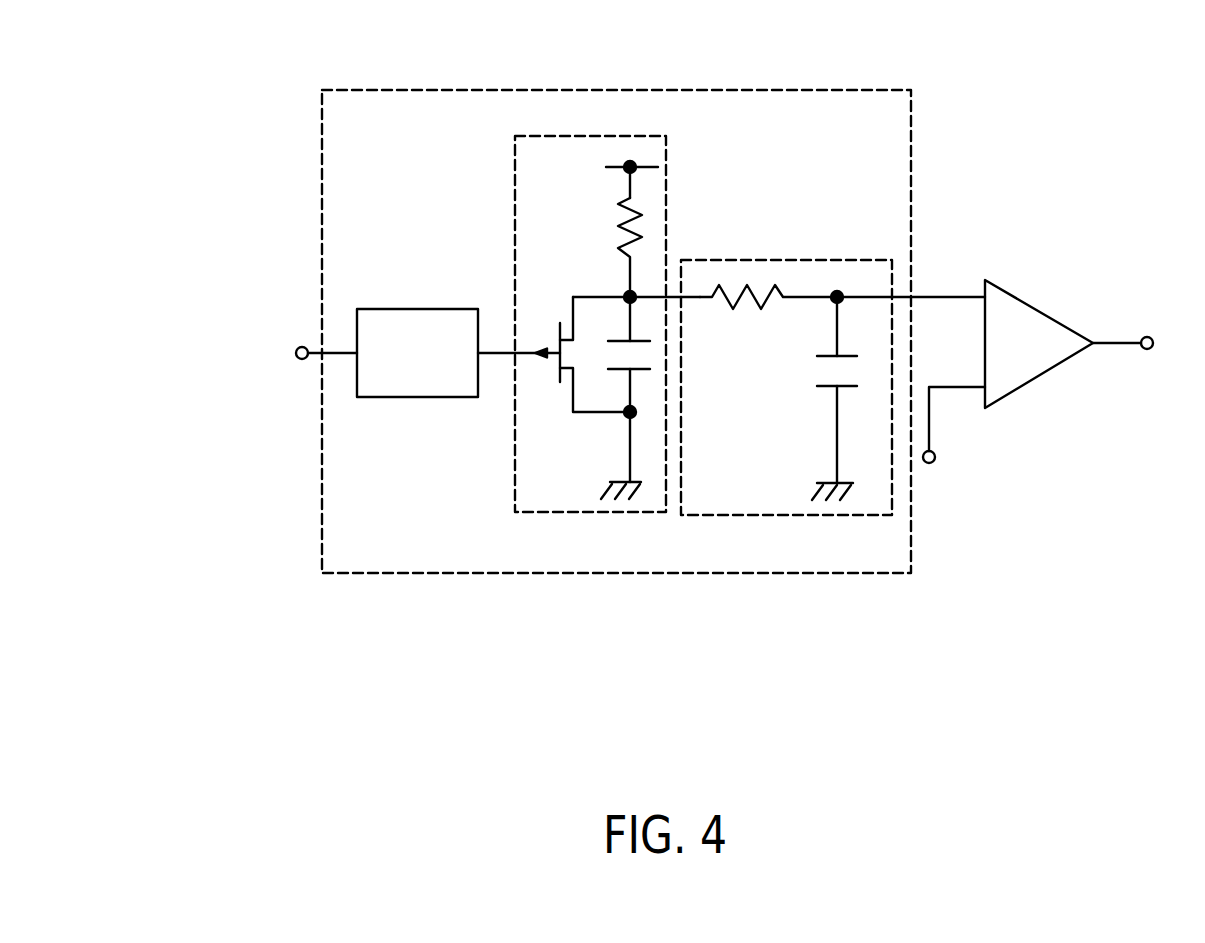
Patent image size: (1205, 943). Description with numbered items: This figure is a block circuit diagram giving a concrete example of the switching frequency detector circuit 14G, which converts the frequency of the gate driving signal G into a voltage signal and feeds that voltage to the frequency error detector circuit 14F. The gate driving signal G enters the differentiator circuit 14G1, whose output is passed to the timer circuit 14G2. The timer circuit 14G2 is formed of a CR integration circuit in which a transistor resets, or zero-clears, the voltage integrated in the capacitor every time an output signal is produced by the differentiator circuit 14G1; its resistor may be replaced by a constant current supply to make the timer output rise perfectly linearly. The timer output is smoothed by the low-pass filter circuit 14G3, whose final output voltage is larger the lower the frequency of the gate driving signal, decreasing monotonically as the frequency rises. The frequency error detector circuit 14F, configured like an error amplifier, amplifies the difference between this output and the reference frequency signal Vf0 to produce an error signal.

The switching frequency detector circuit 14G is at (612, 580).
The differentiator circuit 14G1 is at (409, 302).
The timer circuit 14G2 is at (586, 125).
The low-pass filter circuit 14G3 is at (788, 258).
The frequency error detector circuit 14F is at (1050, 293).
The gate driving signal G is at (286, 343).
The reference frequency signal Vf0 is at (938, 476).